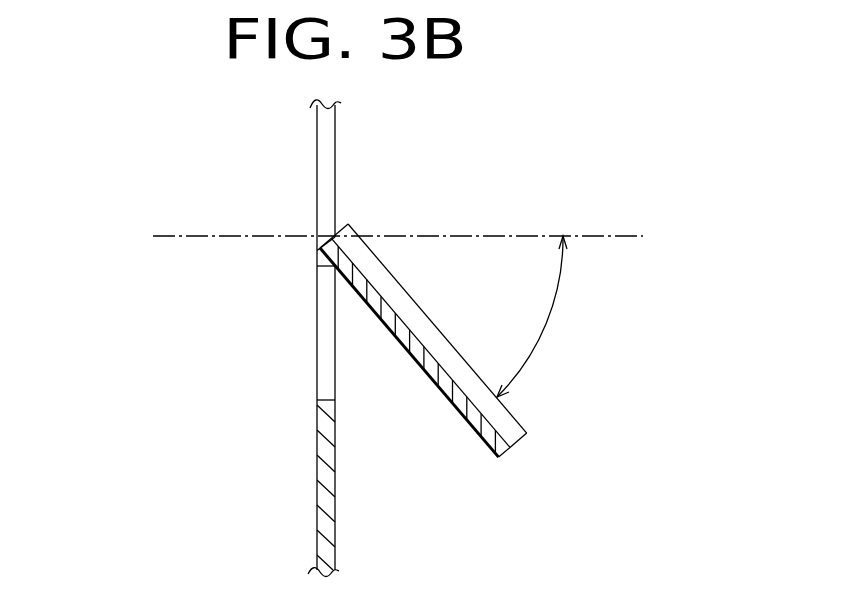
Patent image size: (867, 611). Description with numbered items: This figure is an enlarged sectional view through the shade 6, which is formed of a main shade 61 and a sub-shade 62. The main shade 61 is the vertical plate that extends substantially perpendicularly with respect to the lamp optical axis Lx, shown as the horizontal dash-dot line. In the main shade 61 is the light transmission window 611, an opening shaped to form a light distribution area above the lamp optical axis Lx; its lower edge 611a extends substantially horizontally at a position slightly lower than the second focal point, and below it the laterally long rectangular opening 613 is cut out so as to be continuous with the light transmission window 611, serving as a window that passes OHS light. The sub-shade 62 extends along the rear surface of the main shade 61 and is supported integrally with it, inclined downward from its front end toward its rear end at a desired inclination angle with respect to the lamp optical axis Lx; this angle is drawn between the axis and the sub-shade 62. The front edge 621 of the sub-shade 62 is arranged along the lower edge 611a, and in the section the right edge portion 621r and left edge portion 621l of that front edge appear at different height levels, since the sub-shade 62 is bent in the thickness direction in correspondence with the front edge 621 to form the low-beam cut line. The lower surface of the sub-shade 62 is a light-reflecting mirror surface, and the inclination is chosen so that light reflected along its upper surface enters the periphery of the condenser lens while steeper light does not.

The shade 6 is at (399, 338).
The main shade 61 is at (317, 497).
The light transmission window 611 is at (331, 155).
The lower edge of the light transmission window 611a is at (318, 262).
The opening 613 is at (331, 338).
The sub-shade 62 is at (463, 416).
The front edge of the sub-shade 621 is at (433, 301).
The right edge portion 621r is at (331, 238).
The left edge portion 621l is at (345, 228).
The lamp optical axis Lx is at (170, 236).